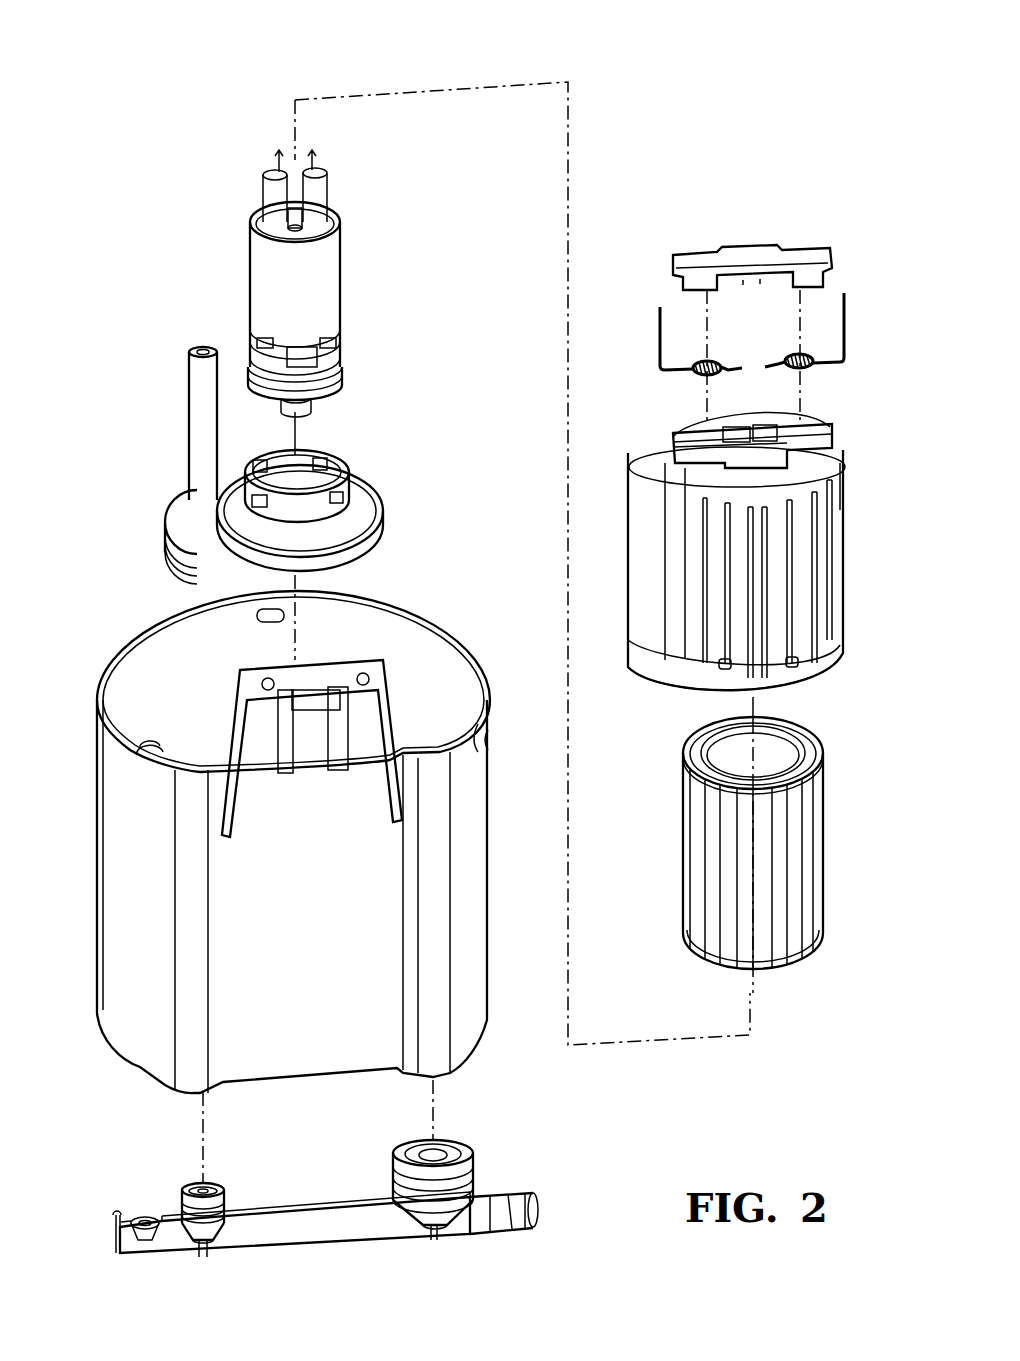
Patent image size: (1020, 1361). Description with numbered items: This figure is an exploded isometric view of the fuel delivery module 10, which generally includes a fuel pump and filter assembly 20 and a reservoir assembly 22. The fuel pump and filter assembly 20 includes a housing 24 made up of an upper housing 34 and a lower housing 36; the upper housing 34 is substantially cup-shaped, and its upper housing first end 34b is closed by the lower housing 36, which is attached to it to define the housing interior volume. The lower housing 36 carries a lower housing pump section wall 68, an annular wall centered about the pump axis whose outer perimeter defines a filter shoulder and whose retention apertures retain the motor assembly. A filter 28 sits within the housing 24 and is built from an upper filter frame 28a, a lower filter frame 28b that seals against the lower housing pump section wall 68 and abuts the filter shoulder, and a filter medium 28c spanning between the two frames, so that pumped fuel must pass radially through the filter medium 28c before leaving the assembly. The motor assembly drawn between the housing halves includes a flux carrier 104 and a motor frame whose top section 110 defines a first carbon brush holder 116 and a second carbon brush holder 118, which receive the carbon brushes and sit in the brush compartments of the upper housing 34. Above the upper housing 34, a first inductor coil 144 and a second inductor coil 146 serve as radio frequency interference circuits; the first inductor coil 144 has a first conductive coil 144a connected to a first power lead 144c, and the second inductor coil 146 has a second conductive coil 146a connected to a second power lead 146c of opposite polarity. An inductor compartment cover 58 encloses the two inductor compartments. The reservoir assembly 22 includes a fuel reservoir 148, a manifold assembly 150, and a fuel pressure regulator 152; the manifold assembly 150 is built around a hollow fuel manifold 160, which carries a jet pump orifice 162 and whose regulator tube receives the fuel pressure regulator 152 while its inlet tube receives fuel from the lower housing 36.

The fuel delivery module 10 is at (133, 38).
The fuel pump and filter assembly 20 is at (522, 524).
The reservoir assembly 22 is at (85, 1138).
The housing 24 is at (334, 515).
The filter 28 is at (765, 886).
The upper filter frame 28a is at (688, 772).
The lower filter frame 28b is at (806, 968).
The filter medium 28c is at (808, 845).
The upper housing 34 is at (716, 581).
The upper housing first end 34b is at (822, 675).
The lower housing 36 is at (334, 515).
The inductor compartment cover 58 is at (752, 250).
The lower housing pump section wall 68 is at (443, 520).
The flux carrier 104 is at (281, 283).
The top section 110 is at (257, 222).
The first carbon brush holder 116 is at (268, 187).
The second carbon brush holder 118 is at (322, 187).
The first inductor coil 144 is at (662, 326).
The first conductive coil 144a is at (672, 300).
The first power lead 144c is at (658, 310).
The second inductor coil 146 is at (835, 317).
The second conductive coil 146a is at (827, 290).
The second power lead 146c is at (847, 300).
The fuel reservoir 148 is at (140, 625).
The manifold assembly 150 is at (533, 1078).
The fuel pressure regulator 152 is at (462, 1150).
The fuel manifold 160 is at (301, 1203).
The jet pump orifice 162 is at (135, 1215).